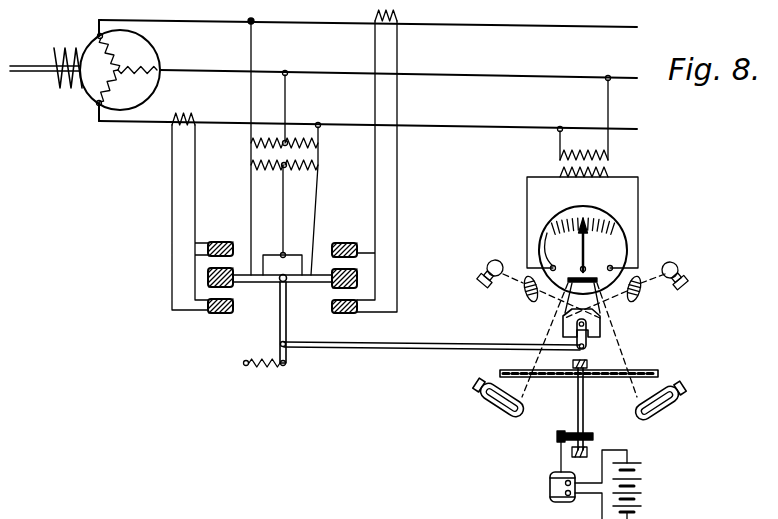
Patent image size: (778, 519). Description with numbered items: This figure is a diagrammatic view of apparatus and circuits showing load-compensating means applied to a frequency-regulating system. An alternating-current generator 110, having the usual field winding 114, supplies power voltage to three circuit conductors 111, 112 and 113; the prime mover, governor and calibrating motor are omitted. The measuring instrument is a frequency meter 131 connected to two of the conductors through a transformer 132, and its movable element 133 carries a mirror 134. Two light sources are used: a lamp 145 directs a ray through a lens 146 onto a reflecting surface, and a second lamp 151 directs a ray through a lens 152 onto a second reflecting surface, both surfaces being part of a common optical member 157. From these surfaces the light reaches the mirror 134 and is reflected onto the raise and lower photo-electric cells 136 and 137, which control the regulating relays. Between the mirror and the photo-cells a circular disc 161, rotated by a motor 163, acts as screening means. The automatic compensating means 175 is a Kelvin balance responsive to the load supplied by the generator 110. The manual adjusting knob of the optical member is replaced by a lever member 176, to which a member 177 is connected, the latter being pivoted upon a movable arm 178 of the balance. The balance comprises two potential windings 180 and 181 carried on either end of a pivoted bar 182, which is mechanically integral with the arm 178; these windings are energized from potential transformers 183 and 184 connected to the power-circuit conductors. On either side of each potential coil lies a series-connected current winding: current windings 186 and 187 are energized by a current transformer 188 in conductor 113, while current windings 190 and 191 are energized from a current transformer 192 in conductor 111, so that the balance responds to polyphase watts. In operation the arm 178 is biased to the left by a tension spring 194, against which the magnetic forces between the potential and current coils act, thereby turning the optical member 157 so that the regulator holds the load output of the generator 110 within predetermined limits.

The alternating-current generator 110 is at (137, 16).
The circuit conductor 111 is at (560, 26).
The circuit conductor 112 is at (550, 76).
The circuit conductor 113 is at (534, 126).
The field winding 114 is at (70, 88).
The frequency meter 131 is at (590, 208).
The transformer 132 is at (609, 162).
The movable element 133 is at (553, 242).
The mirror 134 is at (586, 271).
The raise photo-electric cell 136 is at (500, 411).
The lower photo-electric cell 137 is at (658, 413).
The lamp 145 is at (672, 261).
The lens 146 is at (638, 294).
The lamp 151 is at (488, 260).
The lens 152 is at (523, 292).
The common optical member 157 is at (563, 325).
The circular disc 161 is at (648, 373).
The motor 163 is at (550, 484).
The automatic compensating means 175 is at (296, 393).
The lever member 176 is at (587, 340).
The member 177 is at (442, 343).
The movable arm 178 is at (288, 335).
The potential winding 180 is at (233, 287).
The potential winding 181 is at (332, 288).
The pivoted bar 182 is at (309, 272).
The potential transformer 183 is at (240, 160).
The potential transformer 184 is at (349, 160).
The current winding 186 is at (228, 242).
The current winding 187 is at (213, 313).
The current transformer 188 is at (171, 130).
The current winding 190 is at (355, 243).
The current winding 191 is at (350, 313).
The current transformer 192 is at (398, 26).
The tension spring 194 is at (257, 352).